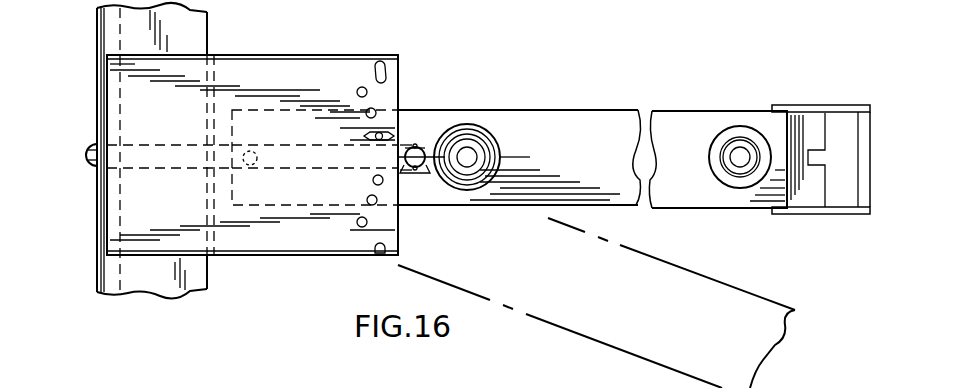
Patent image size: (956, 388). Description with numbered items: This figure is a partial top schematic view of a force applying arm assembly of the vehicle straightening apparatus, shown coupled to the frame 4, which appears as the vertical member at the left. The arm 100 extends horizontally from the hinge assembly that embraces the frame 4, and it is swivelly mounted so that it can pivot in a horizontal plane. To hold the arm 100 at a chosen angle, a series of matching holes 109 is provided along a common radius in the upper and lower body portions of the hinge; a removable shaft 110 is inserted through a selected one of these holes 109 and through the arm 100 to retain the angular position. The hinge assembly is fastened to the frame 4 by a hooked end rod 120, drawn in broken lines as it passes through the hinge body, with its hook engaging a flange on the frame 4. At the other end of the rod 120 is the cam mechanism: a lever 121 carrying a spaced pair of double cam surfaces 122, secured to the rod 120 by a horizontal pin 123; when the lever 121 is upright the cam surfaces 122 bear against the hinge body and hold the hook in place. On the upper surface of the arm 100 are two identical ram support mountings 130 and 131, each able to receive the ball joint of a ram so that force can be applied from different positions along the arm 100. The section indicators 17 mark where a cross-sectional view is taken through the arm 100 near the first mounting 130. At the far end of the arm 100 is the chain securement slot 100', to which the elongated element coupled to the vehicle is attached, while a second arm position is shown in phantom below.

The frame 4 is at (112, 27).
The hooked end rod 120 is at (258, 148).
The matching holes 109 is at (362, 86).
The removable shaft 110 is at (362, 135).
The lever 121 is at (82, 166).
The double cam surfaces 122 is at (403, 177).
The horizontal pin 123 is at (418, 170).
The arm 100 is at (530, 121).
The ram support mounting 130 is at (466, 125).
The section line 17- 17 is at (432, 157).
The chain securement slot 100' is at (759, 125).
The ram support mounting 131 is at (730, 127).